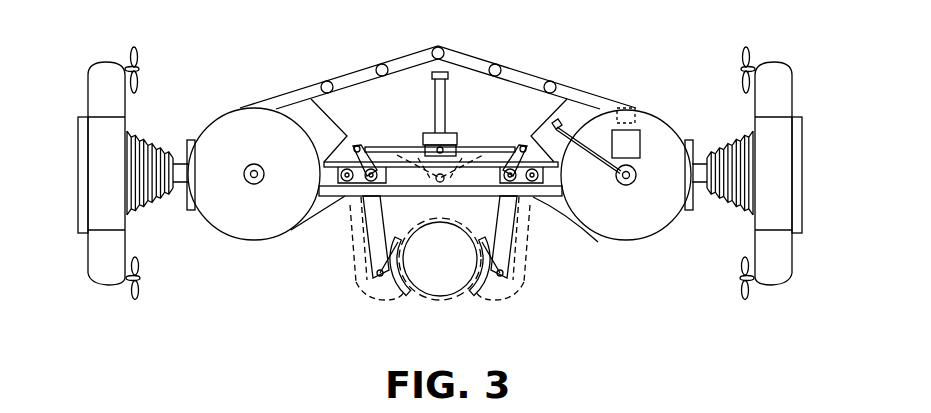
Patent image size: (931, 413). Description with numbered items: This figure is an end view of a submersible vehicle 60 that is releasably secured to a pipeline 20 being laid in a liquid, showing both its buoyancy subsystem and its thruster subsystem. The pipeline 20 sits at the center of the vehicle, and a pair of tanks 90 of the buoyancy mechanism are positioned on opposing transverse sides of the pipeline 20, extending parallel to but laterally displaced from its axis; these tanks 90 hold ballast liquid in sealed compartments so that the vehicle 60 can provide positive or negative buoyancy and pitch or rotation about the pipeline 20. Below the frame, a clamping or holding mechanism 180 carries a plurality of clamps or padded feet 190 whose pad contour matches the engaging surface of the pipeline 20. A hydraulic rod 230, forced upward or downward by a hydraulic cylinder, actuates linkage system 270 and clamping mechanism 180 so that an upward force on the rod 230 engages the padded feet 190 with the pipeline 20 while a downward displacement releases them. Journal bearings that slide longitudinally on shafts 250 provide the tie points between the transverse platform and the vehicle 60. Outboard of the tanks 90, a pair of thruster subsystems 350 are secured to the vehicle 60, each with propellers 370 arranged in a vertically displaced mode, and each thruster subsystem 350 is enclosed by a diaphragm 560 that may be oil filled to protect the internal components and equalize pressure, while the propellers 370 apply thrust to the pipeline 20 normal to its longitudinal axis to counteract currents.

The thruster subsystem 350 is at (98, 73).
The propeller 370 is at (137, 58).
The diaphragm 560 is at (152, 150).
The tank 90 is at (222, 110).
The submersible vehicle 60 is at (310, 272).
The linkage system 270 is at (505, 148).
The hydraulic rod 230 is at (447, 103).
The shaft 250 is at (511, 178).
The clamping mechanism 180 is at (362, 240).
The padded foot 190 is at (397, 297).
The pipeline 20 is at (460, 300).